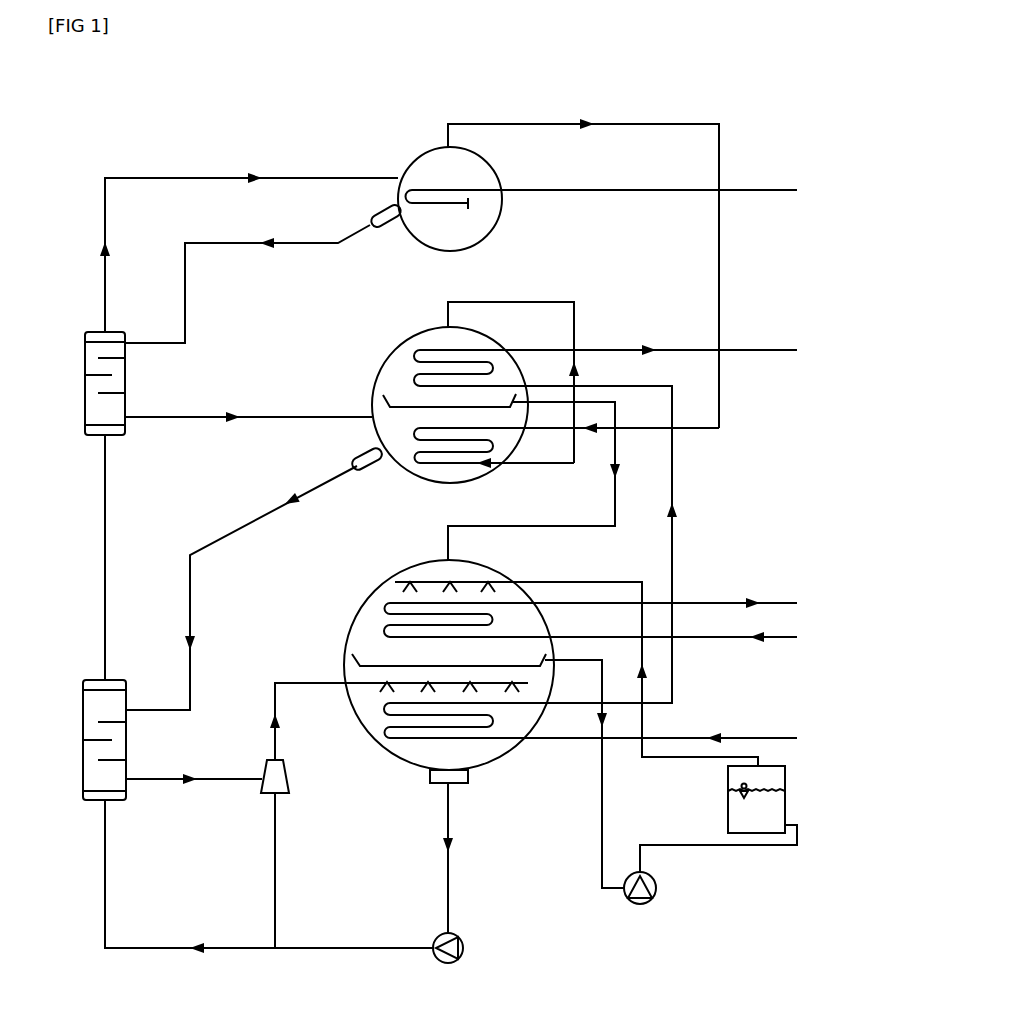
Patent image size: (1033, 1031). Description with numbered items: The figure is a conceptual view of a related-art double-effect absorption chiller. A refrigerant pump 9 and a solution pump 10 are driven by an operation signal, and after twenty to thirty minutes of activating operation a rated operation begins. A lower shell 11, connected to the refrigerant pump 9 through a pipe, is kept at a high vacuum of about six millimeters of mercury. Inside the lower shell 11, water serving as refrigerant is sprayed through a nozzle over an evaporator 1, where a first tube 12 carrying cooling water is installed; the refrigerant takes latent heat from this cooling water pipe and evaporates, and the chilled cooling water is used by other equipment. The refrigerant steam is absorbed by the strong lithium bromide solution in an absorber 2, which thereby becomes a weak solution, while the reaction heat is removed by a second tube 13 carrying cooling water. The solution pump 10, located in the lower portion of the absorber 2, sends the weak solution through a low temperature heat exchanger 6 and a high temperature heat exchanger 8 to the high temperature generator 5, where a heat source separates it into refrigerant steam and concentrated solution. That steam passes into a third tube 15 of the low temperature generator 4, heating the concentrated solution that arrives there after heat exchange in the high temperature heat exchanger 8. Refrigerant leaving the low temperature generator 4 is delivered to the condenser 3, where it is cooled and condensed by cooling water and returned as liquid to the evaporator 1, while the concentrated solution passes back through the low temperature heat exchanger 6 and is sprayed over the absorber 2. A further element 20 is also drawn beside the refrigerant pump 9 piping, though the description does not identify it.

The evaporator 1 is at (373, 605).
The absorber 2 is at (372, 722).
The condenser 3 is at (400, 346).
The low temperature generator 4 is at (410, 455).
The high temperature generator 5 is at (483, 152).
The low temperature heat exchanger 6 is at (83, 718).
The high temperature heat exchanger 8 is at (84, 356).
The refrigerant pump 9 is at (656, 886).
The solution pump 10 is at (463, 946).
The lower shell 11 is at (507, 753).
The first tube 12 is at (392, 628).
The second tube 13 is at (414, 740).
The third tube 15 is at (455, 463).
The refrigerant tank 20 is at (793, 782).